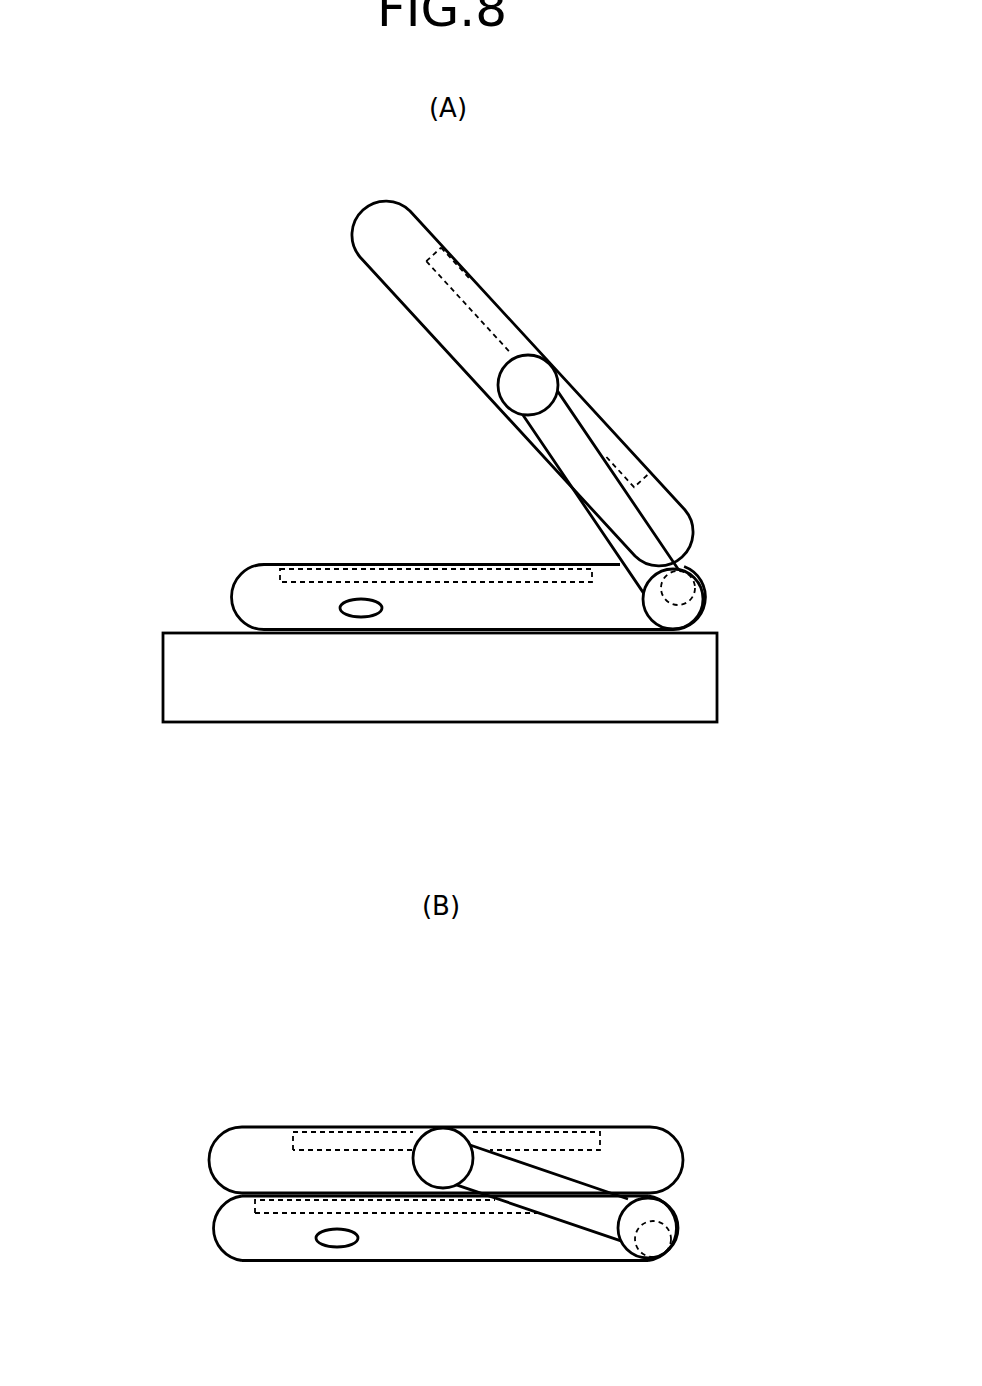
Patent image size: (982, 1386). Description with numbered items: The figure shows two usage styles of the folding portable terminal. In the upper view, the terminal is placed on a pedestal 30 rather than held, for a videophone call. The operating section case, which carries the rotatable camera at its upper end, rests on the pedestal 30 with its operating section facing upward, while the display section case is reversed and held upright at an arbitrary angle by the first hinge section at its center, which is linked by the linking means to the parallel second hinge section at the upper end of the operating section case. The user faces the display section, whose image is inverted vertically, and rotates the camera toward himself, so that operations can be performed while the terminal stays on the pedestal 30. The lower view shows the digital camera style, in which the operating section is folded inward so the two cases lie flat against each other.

The pedestal 30 is at (187, 672).